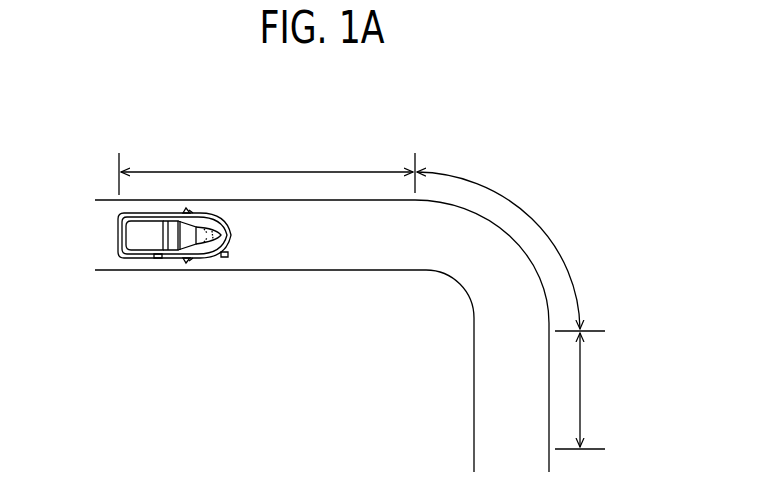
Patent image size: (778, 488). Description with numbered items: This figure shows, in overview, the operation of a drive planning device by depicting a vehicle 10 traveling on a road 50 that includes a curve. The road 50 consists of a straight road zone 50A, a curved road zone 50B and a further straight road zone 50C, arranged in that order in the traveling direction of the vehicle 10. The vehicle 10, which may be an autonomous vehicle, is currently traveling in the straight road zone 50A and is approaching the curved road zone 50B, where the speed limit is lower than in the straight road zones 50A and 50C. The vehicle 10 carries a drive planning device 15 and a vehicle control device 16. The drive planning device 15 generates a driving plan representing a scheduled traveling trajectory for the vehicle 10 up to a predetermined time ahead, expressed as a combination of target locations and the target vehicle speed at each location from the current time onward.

The vehicle 10 is at (118, 235).
The drive planning device 15 is at (158, 259).
The vehicle control device 16 is at (225, 259).
The road 50 is at (340, 271).
The straight road zone 50A is at (267, 167).
The curved road zone 50B is at (512, 250).
The straight road zone 50C is at (604, 390).